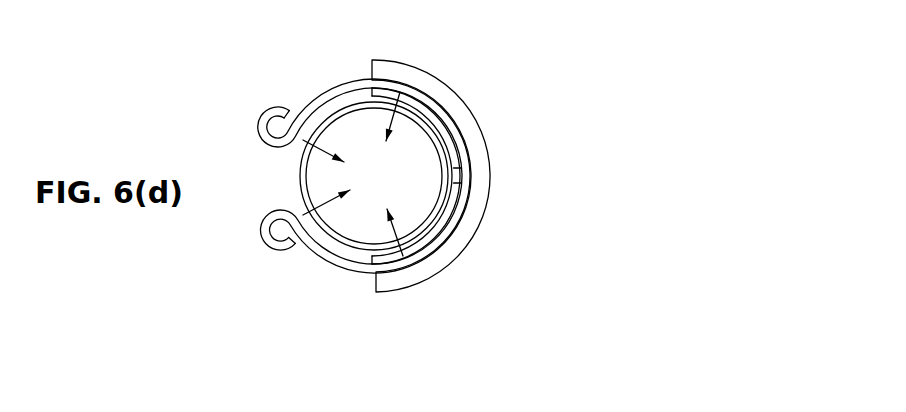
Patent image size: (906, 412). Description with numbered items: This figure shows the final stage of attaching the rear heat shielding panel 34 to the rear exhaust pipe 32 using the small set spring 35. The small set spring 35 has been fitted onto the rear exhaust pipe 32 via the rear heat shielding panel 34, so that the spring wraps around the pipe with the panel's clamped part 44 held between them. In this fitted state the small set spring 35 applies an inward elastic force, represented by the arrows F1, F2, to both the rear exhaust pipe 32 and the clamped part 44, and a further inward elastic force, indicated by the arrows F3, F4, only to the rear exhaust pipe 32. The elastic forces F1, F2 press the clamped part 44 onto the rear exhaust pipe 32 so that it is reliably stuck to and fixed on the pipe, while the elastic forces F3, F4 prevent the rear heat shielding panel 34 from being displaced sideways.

The rear exhaust pipe 32 is at (300, 179).
The rear heat shielding panel 34 is at (448, 86).
The small set spring 35 is at (322, 96).
The clamped part 44 is at (450, 130).
The elastic force F1 is at (404, 129).
The elastic force F2 is at (405, 223).
The elastic force F3 is at (330, 143).
The elastic force F4 is at (334, 213).